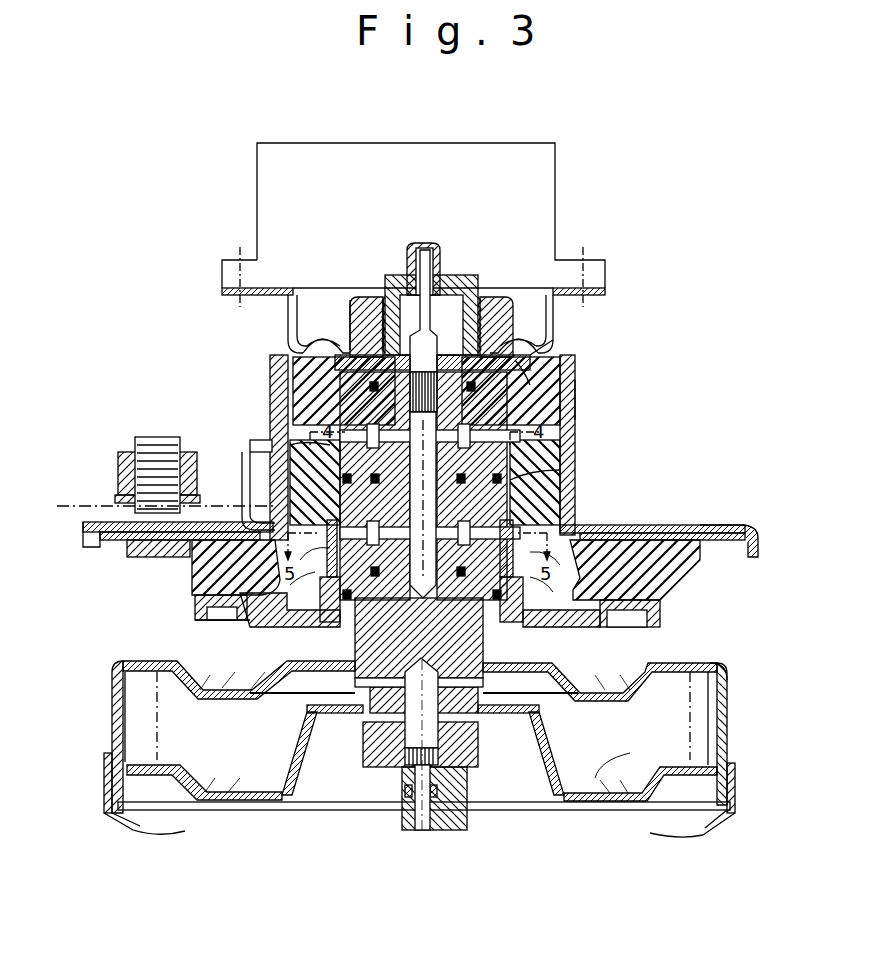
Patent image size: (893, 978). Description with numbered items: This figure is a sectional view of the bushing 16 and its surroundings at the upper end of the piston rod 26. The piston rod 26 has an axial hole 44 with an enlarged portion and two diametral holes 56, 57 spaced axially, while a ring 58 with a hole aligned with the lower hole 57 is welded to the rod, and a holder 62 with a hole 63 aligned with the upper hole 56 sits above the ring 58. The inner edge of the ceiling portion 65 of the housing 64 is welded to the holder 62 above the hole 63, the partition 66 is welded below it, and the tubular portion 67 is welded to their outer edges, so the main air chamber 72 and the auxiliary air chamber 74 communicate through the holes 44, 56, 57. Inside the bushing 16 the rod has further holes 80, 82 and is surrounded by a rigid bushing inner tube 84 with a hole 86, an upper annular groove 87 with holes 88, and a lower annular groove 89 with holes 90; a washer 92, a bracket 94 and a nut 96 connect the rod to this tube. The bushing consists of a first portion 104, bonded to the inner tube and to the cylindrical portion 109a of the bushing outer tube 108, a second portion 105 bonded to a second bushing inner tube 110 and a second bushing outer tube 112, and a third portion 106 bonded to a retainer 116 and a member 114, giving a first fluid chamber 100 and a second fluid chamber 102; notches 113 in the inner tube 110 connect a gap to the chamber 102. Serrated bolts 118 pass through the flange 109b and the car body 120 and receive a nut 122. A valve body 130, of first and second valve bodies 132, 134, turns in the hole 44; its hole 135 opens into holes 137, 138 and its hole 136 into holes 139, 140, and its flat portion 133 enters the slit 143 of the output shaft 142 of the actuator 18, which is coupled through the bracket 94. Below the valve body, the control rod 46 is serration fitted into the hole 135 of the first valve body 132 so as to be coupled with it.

The actuator 18 is at (270, 210).
The bracket 94 is at (580, 312).
The washer 92 is at (562, 340).
The holes 88 is at (305, 348).
The hole 136 is at (495, 340).
The valve body 130 is at (483, 290).
The slit 143 is at (418, 245).
The flat portion 133 is at (416, 246).
The output shaft 142 is at (463, 258).
The nut 96 is at (515, 350).
The hole 139 is at (537, 335).
The first fluid chamber 100 is at (330, 400).
The first portion of the bushing 104 is at (540, 398).
The bushing 16 is at (275, 372).
The bushing outer tube 108 is at (585, 410).
The cylindrical portion 109a is at (580, 393).
The hole 80 is at (530, 380).
The annular groove 87 is at (320, 450).
The hole 86 is at (310, 458).
The second bushing outer tube 112 is at (280, 462).
The second bushing inner tube 110 is at (272, 488).
The bushing inner tube 84 is at (545, 458).
The second portion of the bushing 105 is at (545, 480).
The hole 82 is at (520, 505).
The piston rod 26 is at (468, 800).
The hole 140 is at (350, 632).
The holder 62 is at (520, 625).
The holes 90 is at (205, 610).
The annular groove 89 is at (235, 624).
The member 114 is at (660, 617).
The second fluid chamber 102 is at (225, 580).
The third portion of the bushing 106 is at (640, 565).
The notches 113 is at (555, 528).
The flange 109b is at (720, 525).
The retainer 116 is at (747, 527).
The serrated bolts 118 is at (145, 546).
The nut 122 is at (132, 452).
The car body 120 is at (92, 504).
The auxiliary air chamber 74 is at (140, 715).
The housing 64 is at (728, 716).
The ceiling portion 65 is at (705, 663).
The partition 66 is at (640, 753).
The hole 57 is at (500, 782).
The main air chamber 72 is at (135, 826).
The tubular portion 67 is at (722, 822).
The hole 56 is at (480, 700).
The hole 63 is at (490, 714).
The hole 137 is at (375, 683).
The ring 58 is at (368, 758).
The hole 44 is at (395, 805).
The hole 138 is at (385, 800).
The lower pin 46 is at (421, 830).
The hole 135 is at (442, 828).
The first valve body 132 is at (357, 300).
The second valve body 134 is at (383, 290).